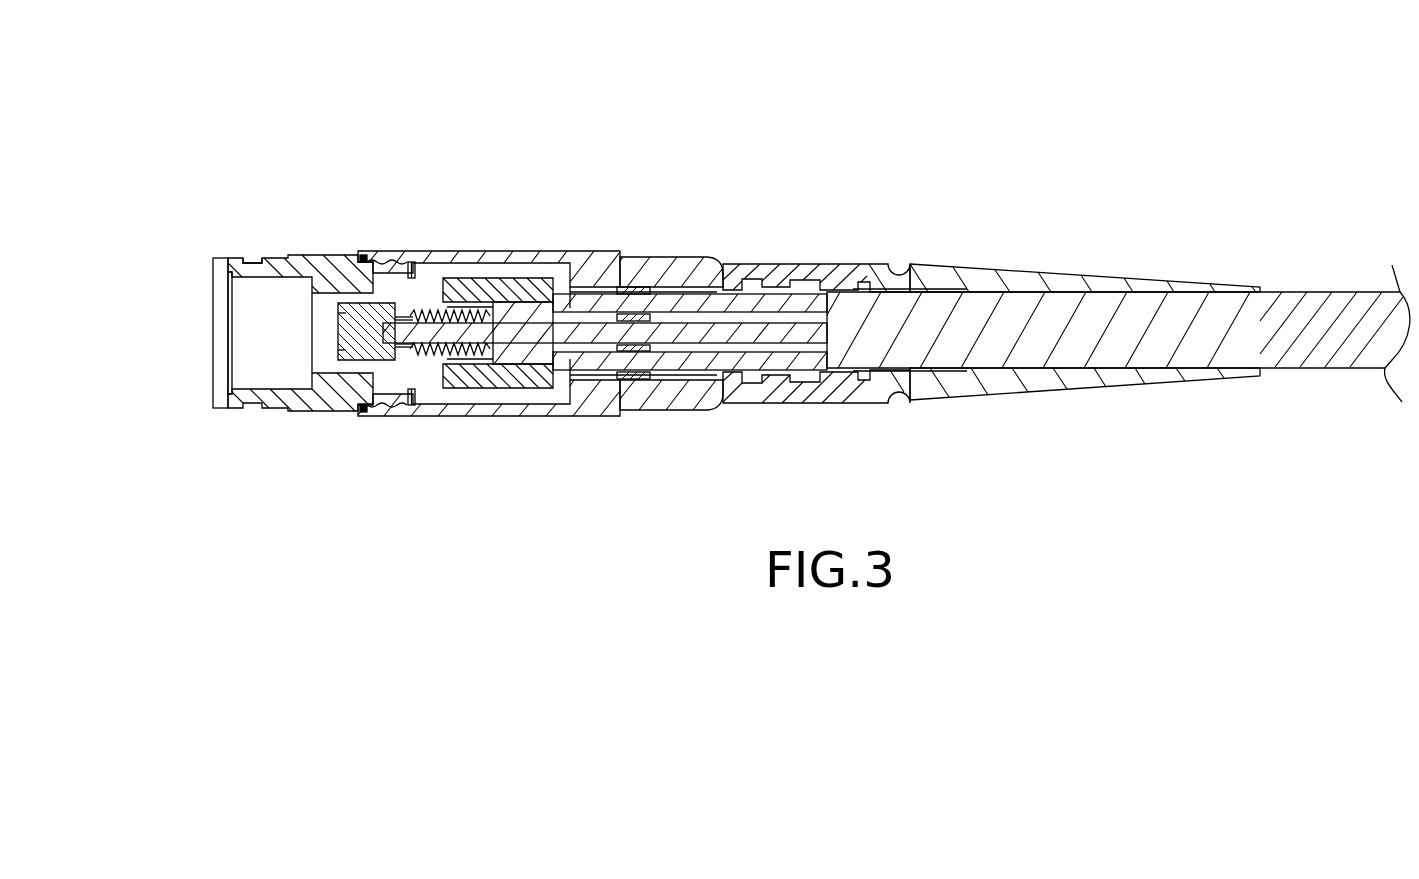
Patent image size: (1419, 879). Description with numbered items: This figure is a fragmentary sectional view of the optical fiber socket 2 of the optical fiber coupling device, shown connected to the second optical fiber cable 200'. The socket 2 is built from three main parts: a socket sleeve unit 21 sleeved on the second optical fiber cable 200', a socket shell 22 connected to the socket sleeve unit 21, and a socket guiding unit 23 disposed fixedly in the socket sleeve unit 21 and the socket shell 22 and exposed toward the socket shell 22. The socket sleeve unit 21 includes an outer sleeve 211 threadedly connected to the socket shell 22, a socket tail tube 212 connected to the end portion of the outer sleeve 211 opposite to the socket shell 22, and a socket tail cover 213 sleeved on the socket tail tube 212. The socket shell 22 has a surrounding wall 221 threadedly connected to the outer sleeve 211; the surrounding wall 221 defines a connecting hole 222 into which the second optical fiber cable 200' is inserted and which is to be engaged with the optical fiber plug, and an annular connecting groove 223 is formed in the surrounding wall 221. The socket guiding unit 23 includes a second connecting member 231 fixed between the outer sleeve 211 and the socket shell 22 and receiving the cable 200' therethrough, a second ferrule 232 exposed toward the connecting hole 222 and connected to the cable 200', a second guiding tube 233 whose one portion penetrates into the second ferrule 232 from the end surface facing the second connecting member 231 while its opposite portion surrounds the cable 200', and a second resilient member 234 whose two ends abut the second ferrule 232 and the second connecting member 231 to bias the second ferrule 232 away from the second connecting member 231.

The optical fiber socket 2 is at (718, 160).
The socket sleeve unit 21 is at (982, 244).
The outer sleeve 211 is at (603, 252).
The socket tail tube 212 is at (815, 275).
The socket tail cover 213 is at (1073, 277).
The socket shell 22 is at (205, 230).
The surrounding wall 221 is at (307, 412).
The connecting hole 222 is at (222, 334).
The annular connecting groove 223 is at (251, 264).
The socket guiding unit 23 is at (439, 210).
The second connecting member 231 is at (560, 280).
The second ferrule 232 is at (358, 304).
The second guiding tube 233 is at (407, 392).
The second resilient member 234 is at (470, 305).
The second optical fiber cable 200' is at (1118, 296).